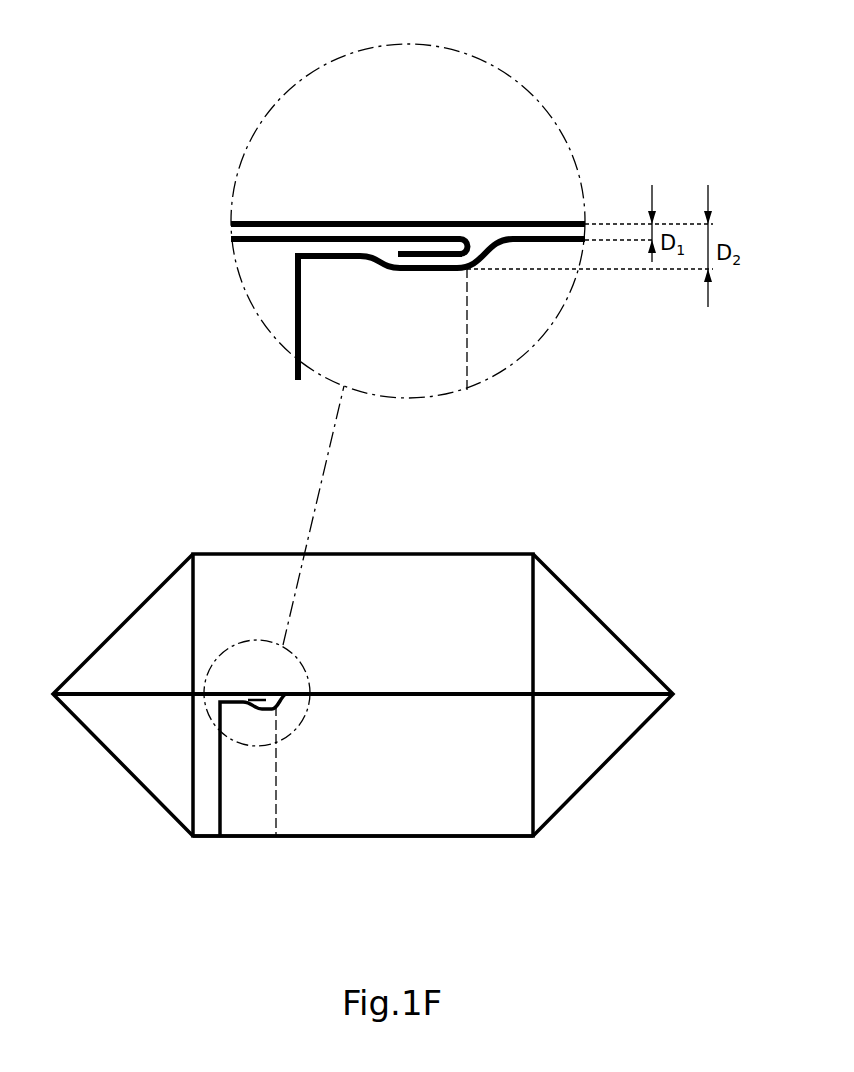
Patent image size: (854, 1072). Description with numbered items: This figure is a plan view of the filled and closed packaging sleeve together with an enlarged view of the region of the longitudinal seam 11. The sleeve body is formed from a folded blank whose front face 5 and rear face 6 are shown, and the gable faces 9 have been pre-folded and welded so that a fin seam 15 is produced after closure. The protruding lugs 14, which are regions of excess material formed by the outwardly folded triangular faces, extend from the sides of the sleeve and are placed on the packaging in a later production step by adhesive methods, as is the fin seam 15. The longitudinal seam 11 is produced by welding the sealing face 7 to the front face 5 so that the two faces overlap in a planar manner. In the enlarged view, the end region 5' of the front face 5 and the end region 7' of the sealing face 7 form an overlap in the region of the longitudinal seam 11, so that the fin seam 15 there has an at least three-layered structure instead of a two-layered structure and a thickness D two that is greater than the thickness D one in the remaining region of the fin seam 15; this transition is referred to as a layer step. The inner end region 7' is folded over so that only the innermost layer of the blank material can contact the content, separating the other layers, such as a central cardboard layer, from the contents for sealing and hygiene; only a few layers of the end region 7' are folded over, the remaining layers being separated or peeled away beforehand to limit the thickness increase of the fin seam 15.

The front face 5 is at (507, 282).
The end region of the front face 5' is at (364, 318).
The rear face 6 is at (531, 221).
The sealing face 7 is at (349, 207).
The end region of the sealing face 7' is at (430, 207).
The gable faces 9 is at (478, 840).
The longitudinal seam 11 is at (257, 808).
The lugs 14 is at (578, 768).
The fin seam 15 is at (407, 700).